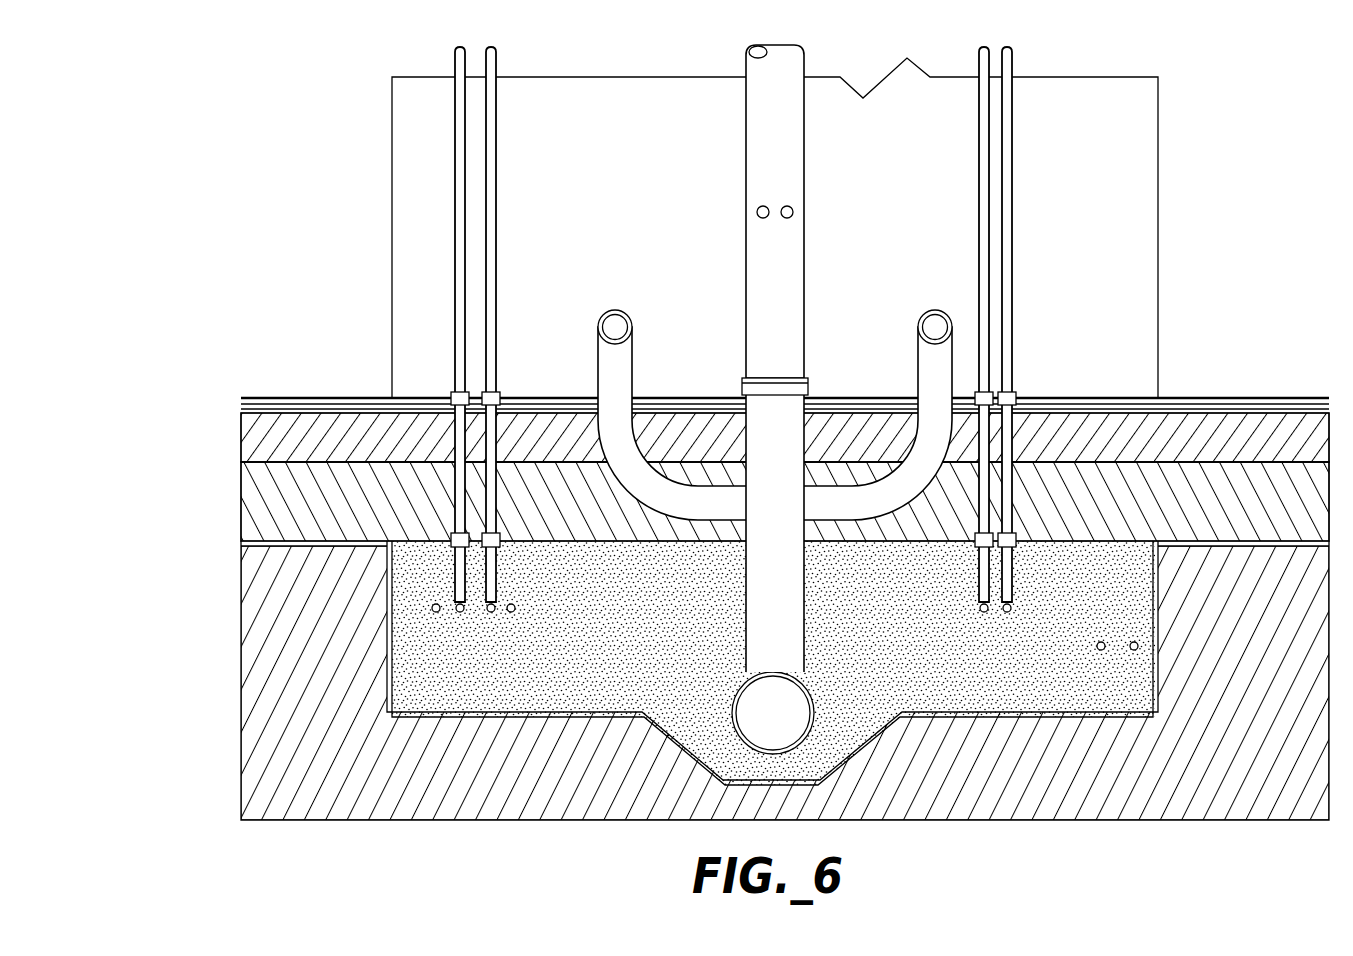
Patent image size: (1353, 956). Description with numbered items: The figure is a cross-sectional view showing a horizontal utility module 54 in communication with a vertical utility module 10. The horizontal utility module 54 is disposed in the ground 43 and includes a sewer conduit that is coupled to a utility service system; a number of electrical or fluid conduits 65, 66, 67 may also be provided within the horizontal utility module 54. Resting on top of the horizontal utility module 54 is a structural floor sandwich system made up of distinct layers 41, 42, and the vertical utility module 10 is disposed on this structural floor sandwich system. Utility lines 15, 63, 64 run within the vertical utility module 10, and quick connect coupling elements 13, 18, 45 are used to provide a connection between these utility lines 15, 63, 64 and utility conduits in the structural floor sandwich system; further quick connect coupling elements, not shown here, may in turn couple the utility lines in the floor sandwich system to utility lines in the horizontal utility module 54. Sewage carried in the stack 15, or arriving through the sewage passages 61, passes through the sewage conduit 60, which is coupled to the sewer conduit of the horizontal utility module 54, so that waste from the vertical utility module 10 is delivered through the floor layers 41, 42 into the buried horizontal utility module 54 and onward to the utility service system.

The vertical utility module 10 is at (1158, 190).
The quick connect coupling element 13 is at (500, 393).
The stack 15 is at (795, 175).
The quick connect coupling element 18 is at (1015, 393).
The layer 41 is at (241, 432).
The layer 42 is at (241, 505).
The ground 43 is at (1093, 820).
The quick connect coupling element 45 is at (810, 388).
The horizontal utility module 54 is at (760, 724).
The sewage conduit 60 is at (762, 481).
The sewage passage 61 is at (622, 312).
The utility line 63 is at (495, 185).
The utility line 64 is at (1008, 133).
The electrical or fluid conduit 65 is at (1101, 650).
The electrical or fluid conduit 66 is at (511, 612).
The electrical or fluid conduit 67 is at (984, 612).